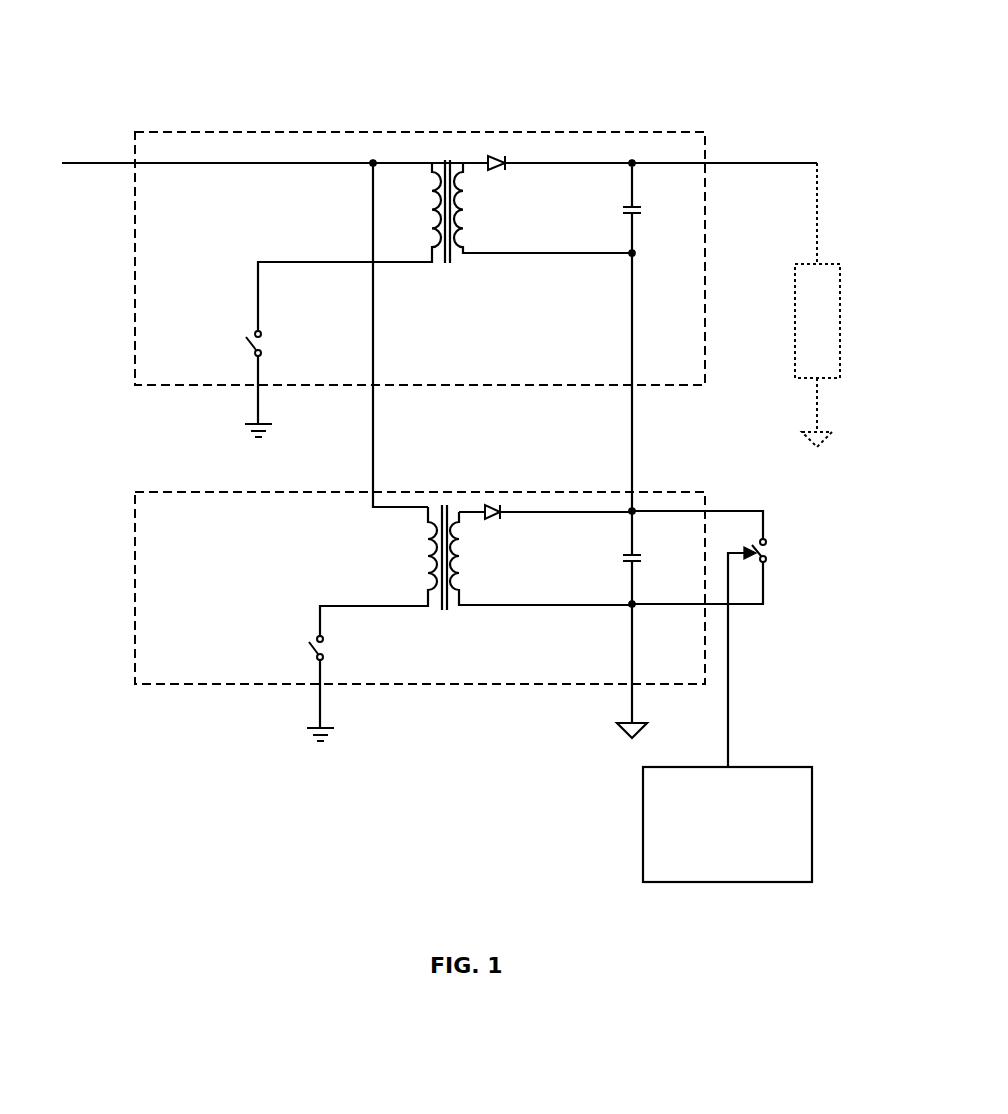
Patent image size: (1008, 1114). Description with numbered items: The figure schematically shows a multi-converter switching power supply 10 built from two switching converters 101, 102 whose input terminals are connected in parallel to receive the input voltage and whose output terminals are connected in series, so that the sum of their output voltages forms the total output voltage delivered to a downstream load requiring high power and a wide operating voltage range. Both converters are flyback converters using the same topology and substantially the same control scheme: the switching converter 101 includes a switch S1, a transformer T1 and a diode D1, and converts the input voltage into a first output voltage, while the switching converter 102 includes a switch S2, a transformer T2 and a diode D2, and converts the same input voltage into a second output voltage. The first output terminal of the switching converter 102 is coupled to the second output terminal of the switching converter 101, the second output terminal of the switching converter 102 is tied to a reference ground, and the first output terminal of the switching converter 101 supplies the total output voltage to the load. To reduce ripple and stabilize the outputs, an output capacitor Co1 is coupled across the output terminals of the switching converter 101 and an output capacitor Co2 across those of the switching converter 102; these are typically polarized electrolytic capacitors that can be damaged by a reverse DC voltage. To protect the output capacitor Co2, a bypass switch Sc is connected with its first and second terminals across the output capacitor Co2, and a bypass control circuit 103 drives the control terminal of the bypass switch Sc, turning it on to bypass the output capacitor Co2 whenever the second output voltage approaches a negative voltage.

The multi-converter switching power supply 10 is at (703, 70).
The switching converter 101 is at (160, 386).
The switching converter 102 is at (157, 684).
The bypass control circuit 103 is at (663, 882).
The transformer T1 is at (445, 247).
The transformer T2 is at (476, 577).
The diode D1 is at (547, 177).
The diode D2 is at (545, 530).
The output capacitor Co1 is at (636, 337).
The output capacitor Co2 is at (636, 623).
The switch S1 is at (242, 384).
The switch S2 is at (303, 688).
The bypass switch Sc is at (714, 557).